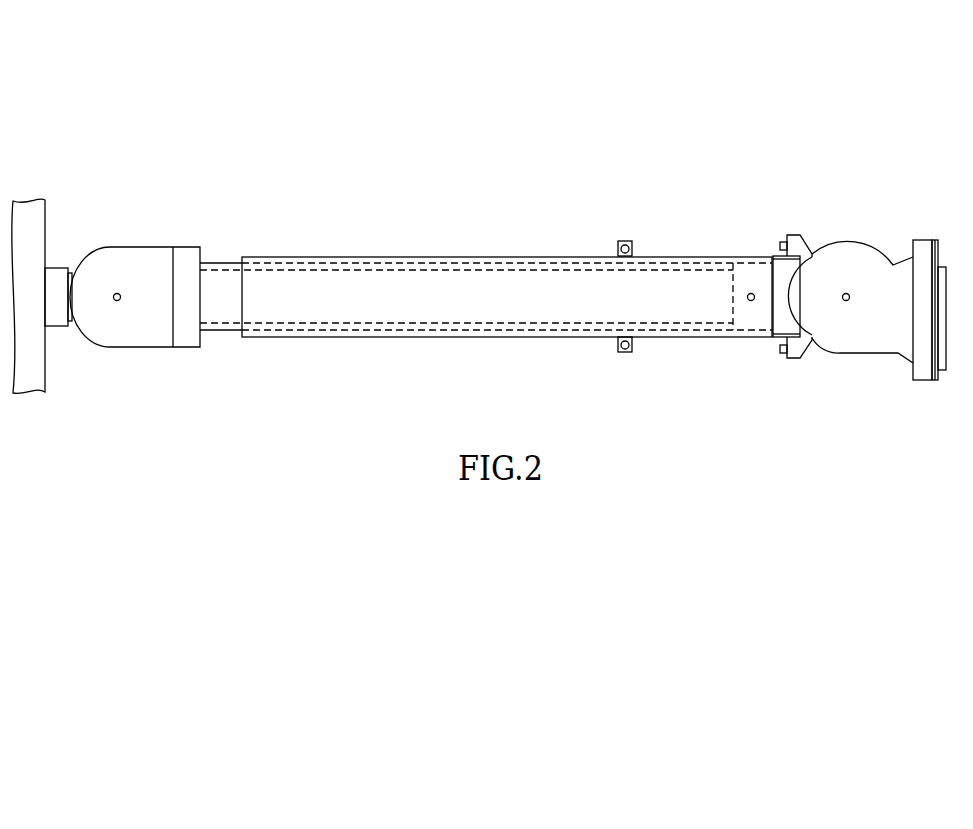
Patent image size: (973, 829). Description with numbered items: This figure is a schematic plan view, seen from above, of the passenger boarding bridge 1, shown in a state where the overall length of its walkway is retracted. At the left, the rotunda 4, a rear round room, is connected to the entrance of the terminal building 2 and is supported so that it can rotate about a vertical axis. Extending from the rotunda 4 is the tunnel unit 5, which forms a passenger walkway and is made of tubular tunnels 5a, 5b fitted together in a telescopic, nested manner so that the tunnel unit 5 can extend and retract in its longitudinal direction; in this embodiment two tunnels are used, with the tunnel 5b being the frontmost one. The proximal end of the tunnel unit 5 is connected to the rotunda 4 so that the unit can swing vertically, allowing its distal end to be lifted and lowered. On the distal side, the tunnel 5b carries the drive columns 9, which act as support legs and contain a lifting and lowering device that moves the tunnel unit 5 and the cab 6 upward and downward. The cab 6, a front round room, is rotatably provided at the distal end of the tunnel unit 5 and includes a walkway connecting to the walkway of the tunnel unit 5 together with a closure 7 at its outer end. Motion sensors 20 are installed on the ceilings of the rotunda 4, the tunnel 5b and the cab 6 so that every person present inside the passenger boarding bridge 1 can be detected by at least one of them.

The passenger boarding bridge 1 is at (480, 108).
The terminal building 2 is at (32, 200).
The rotunda 4 is at (153, 247).
The tunnel unit 5 is at (486, 204).
The tunnel 5a is at (222, 263).
The tunnel 5b is at (321, 257).
The cab 6 is at (867, 240).
The closure 7 is at (922, 240).
The drive columns 9 is at (624, 240).
The motion sensors 20 is at (114, 292).